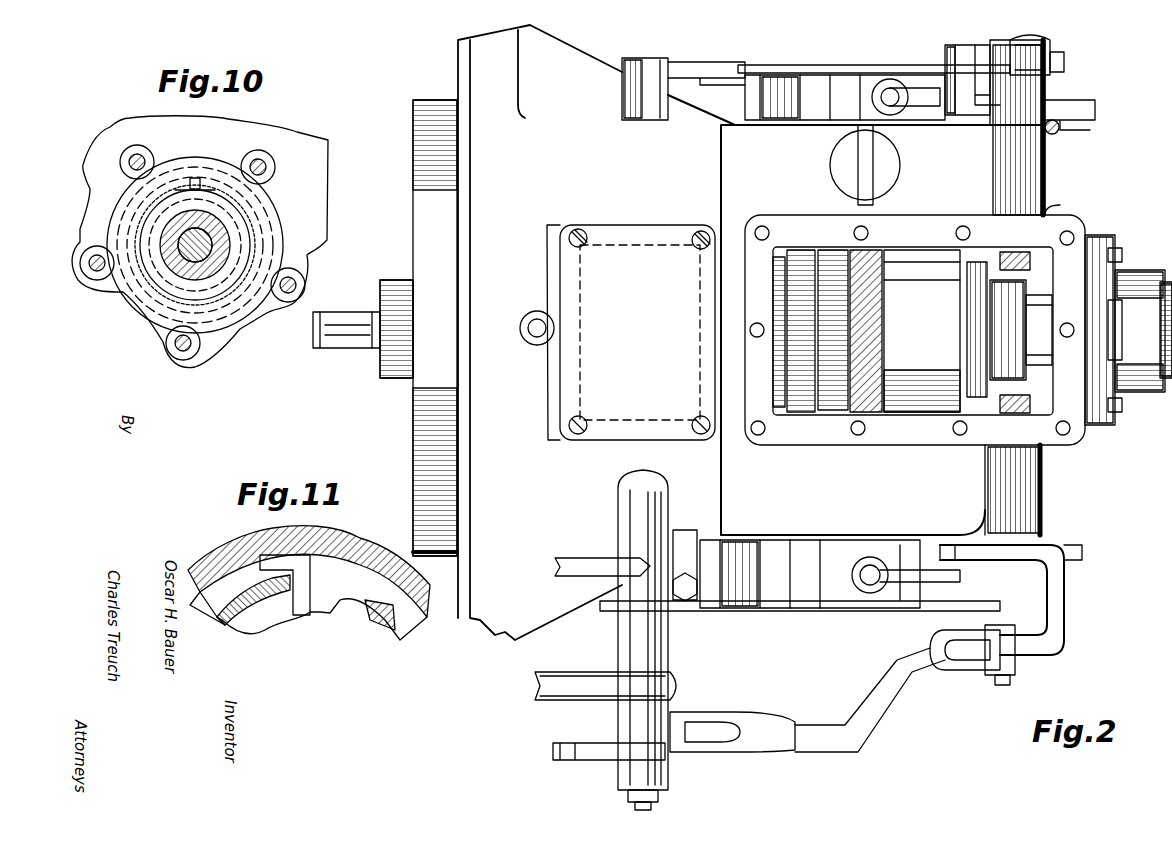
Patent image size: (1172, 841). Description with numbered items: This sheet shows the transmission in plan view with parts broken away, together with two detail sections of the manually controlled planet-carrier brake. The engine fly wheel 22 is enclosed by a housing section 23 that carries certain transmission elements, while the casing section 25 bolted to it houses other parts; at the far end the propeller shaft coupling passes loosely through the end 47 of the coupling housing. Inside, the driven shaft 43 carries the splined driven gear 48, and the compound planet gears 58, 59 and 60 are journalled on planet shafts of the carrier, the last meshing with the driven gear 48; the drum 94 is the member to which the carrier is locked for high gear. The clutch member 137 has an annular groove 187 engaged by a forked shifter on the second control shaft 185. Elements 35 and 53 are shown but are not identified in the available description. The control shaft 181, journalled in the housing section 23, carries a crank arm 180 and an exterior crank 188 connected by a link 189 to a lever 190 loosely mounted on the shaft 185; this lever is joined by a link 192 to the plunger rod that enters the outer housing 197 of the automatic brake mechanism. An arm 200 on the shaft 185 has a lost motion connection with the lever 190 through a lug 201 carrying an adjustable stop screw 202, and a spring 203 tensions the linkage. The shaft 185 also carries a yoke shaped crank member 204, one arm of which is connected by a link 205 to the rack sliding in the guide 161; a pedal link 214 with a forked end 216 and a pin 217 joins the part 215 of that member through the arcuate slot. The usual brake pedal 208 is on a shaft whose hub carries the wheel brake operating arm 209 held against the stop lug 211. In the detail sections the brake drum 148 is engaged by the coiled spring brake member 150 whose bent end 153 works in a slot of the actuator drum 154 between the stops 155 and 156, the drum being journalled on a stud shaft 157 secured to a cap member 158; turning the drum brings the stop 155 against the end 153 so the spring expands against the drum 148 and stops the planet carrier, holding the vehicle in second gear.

In FIG. 2, the fly wheel 22 is at (430, 400).
In FIG. 2, the housing section 23 is at (585, 66).
In FIG. 2, the casing section 25 is at (965, 195).
In FIG. 2, the shaft 35 is at (335, 345).
In FIG. 2, the driven shaft 43 is at (1035, 350).
In FIG. 2, the end of the coupling housing 47 is at (1138, 365).
In FIG. 2, the driven gear 48 is at (834, 255).
In FIG. 2, the hub 53 is at (868, 305).
In FIG. 2, the planet gear 58 is at (775, 295).
In FIG. 2, the planet gear 59 is at (800, 255).
In FIG. 2, the planet gear 60 is at (842, 340).
In FIG. 2, the drum 94 is at (905, 262).
In FIG. 2, the clutch member 137 is at (968, 350).
In FIG. 11, the brake drum 148 is at (355, 558).
In FIG. 10, the coiled spring brake member 150 is at (200, 180).
In FIG. 11, the coiled spring brake member 150 is at (255, 575).
In FIG. 11, the end of spring brake member 153 is at (300, 593).
In FIG. 11, the actuator drum 154 is at (222, 618).
In FIG. 11, the stop 155 is at (372, 610).
In FIG. 11, the stop 156 is at (275, 600).
In FIG. 10, the stud shaft 157 is at (175, 265).
In FIG. 10, the cap member 158 is at (285, 220).
In FIG. 2, the guide 161 is at (830, 600).
In FIG. 2, the crank arm 180 is at (583, 565).
In FIG. 2, the control shaft 181 is at (648, 58).
In FIG. 2, the second control shaft 185 is at (1010, 262).
In FIG. 2, the annular groove 187 is at (1010, 310).
In FIG. 2, the crank 188 is at (690, 62).
In FIG. 2, the link 189 is at (782, 65).
In FIG. 2, the lever 190 is at (1045, 90).
In FIG. 2, the link 192 is at (910, 80).
In FIG. 2, the outer housing 197 is at (835, 85).
In FIG. 2, the arm 200 is at (955, 55).
In FIG. 2, the lug 201 is at (1050, 42).
In FIG. 2, the adjustable stop screw 202 is at (1064, 62).
In FIG. 2, the spring 203 is at (1052, 135).
In FIG. 2, the yoke shaped crank member 204 is at (1065, 618).
In FIG. 2, the link 205 is at (905, 600).
In FIG. 2, the brake pedal 208 is at (575, 675).
In FIG. 2, the wheel brake operating arm 209 is at (718, 610).
In FIG. 2, the stop lug 211 is at (690, 565).
In FIG. 2, the link 214 is at (850, 740).
In FIG. 2, the part of arm 215 is at (1018, 660).
In FIG. 2, the forked end 216 is at (975, 665).
In FIG. 2, the pin 217 is at (1002, 687).